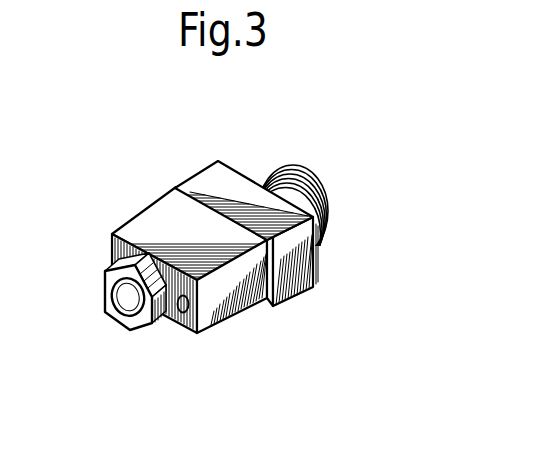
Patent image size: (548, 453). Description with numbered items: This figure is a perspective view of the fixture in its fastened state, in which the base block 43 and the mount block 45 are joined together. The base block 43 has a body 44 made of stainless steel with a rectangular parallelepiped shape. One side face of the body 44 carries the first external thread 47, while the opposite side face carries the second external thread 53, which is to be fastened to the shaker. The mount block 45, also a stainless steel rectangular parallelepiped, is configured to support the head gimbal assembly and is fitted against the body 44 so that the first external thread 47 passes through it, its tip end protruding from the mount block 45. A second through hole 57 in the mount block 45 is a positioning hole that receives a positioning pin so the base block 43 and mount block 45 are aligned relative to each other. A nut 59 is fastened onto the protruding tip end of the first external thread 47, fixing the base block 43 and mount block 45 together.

The base block 43 is at (193, 170).
The body 44 is at (240, 172).
The mount block 45 is at (136, 211).
The first external thread 47 is at (126, 305).
The second external thread 53 is at (315, 180).
The second through hole 57 is at (180, 318).
The nut 59 is at (157, 331).